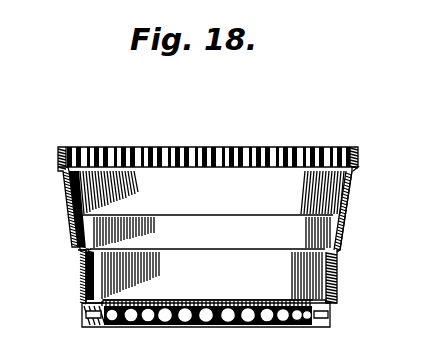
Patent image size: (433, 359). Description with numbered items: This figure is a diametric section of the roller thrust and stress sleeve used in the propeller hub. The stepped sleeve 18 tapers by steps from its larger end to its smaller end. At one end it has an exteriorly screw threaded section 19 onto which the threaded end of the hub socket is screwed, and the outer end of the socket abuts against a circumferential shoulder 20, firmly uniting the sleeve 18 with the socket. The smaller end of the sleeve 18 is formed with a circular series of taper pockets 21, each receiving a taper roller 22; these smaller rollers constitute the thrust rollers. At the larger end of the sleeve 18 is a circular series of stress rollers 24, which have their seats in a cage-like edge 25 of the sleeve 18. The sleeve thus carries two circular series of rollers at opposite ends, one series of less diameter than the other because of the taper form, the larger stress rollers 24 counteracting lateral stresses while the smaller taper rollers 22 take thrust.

The stepped sleeve 18 is at (210, 237).
The exteriorly screw threaded section 19 is at (336, 275).
The circumferential shoulder 20 is at (78, 255).
The taper pockets 21 is at (166, 325).
The taper roller 22 is at (86, 327).
The stress rollers 24 is at (208, 146).
The cage-like edge 25 is at (60, 146).